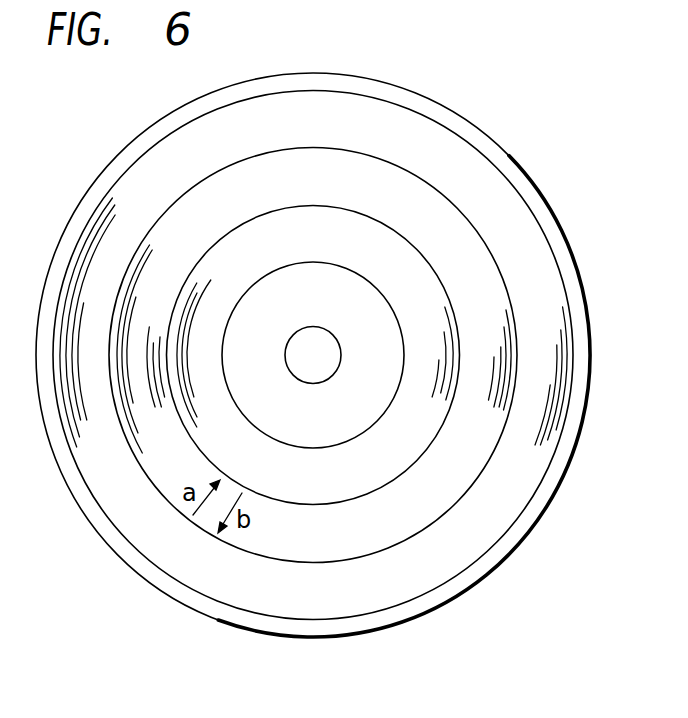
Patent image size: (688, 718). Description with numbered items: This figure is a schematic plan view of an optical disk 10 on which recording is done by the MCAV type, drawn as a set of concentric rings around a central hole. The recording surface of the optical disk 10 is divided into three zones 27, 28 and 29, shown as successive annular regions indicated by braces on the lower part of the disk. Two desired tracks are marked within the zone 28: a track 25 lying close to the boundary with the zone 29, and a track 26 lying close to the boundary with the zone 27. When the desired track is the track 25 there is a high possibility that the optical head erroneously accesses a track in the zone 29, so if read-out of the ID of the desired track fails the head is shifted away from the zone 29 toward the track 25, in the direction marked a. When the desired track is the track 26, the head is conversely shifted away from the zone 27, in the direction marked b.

The optical disk 10 is at (497, 140).
The track 25 is at (138, 412).
The track 26 is at (147, 337).
The zone 27 is at (310, 452).
The zone 28 is at (310, 507).
The zone 29 is at (310, 563).